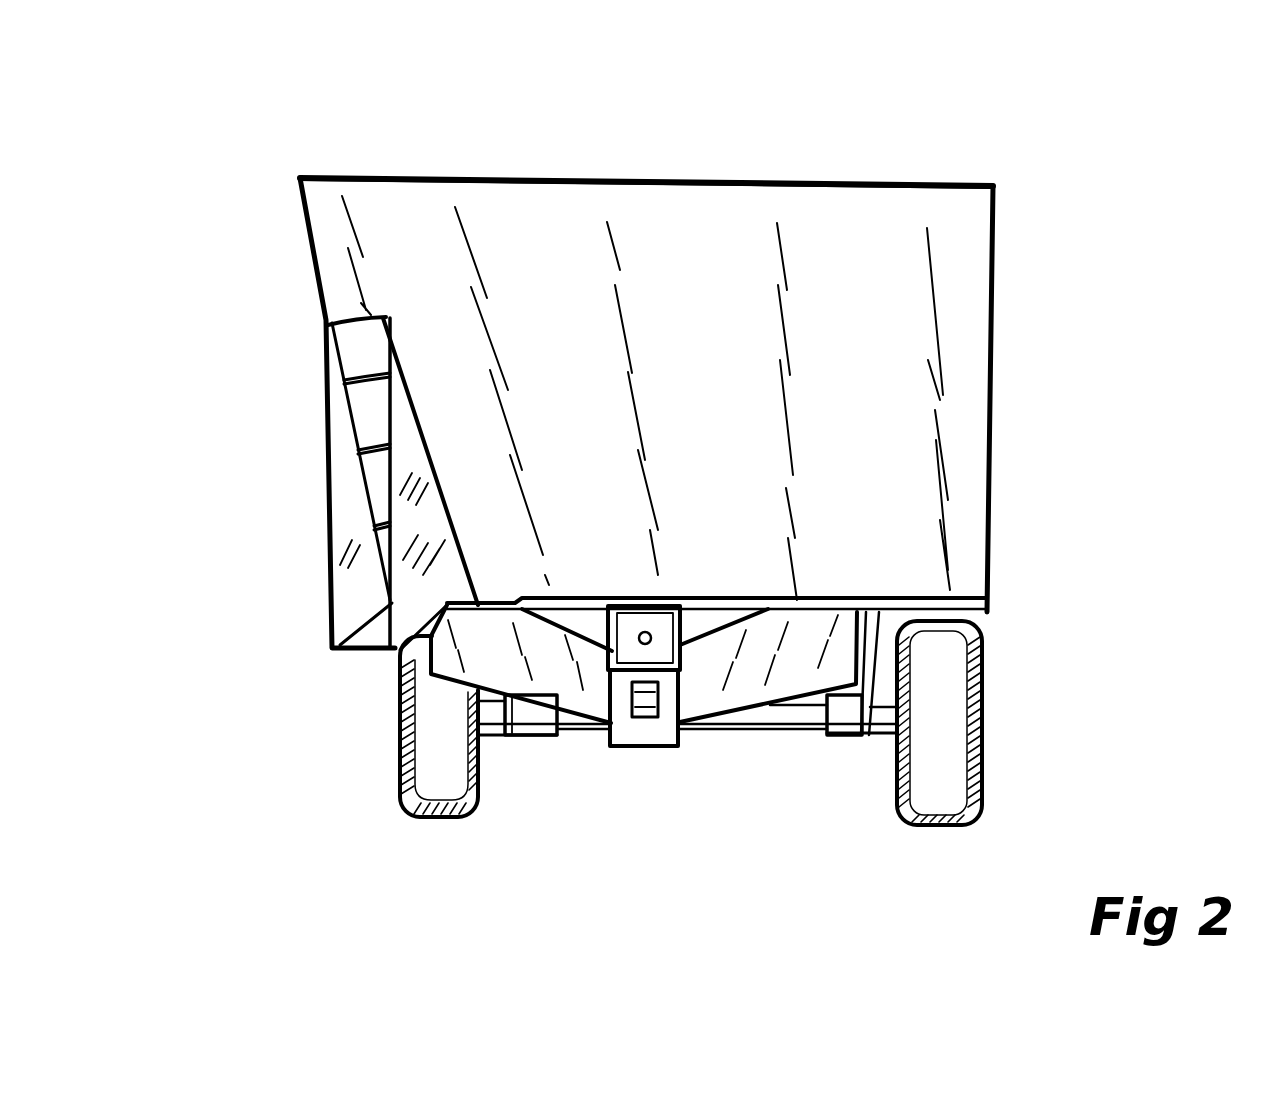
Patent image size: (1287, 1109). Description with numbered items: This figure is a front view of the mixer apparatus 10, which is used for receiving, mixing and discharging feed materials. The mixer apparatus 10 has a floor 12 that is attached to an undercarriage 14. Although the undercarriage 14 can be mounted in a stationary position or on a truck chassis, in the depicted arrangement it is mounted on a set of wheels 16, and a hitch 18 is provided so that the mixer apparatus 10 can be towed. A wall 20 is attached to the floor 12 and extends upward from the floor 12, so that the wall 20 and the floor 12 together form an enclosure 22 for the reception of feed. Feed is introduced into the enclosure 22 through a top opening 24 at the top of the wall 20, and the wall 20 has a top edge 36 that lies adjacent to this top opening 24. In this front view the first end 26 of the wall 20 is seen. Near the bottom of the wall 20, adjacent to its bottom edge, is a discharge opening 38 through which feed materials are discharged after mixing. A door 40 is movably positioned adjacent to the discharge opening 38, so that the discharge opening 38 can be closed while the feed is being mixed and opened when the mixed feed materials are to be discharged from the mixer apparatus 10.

The mixer apparatus 10 is at (495, 160).
The floor 12 is at (962, 605).
The undercarriage 14 is at (748, 688).
The wheels 16 is at (958, 757).
The hitch 18 is at (648, 717).
The wall 20 is at (965, 222).
The enclosure 22 is at (885, 312).
The top opening 24 is at (903, 183).
The first end 26 is at (705, 405).
The top edge 36 is at (753, 183).
The discharge opening 38 is at (383, 575).
The door 40 is at (373, 480).